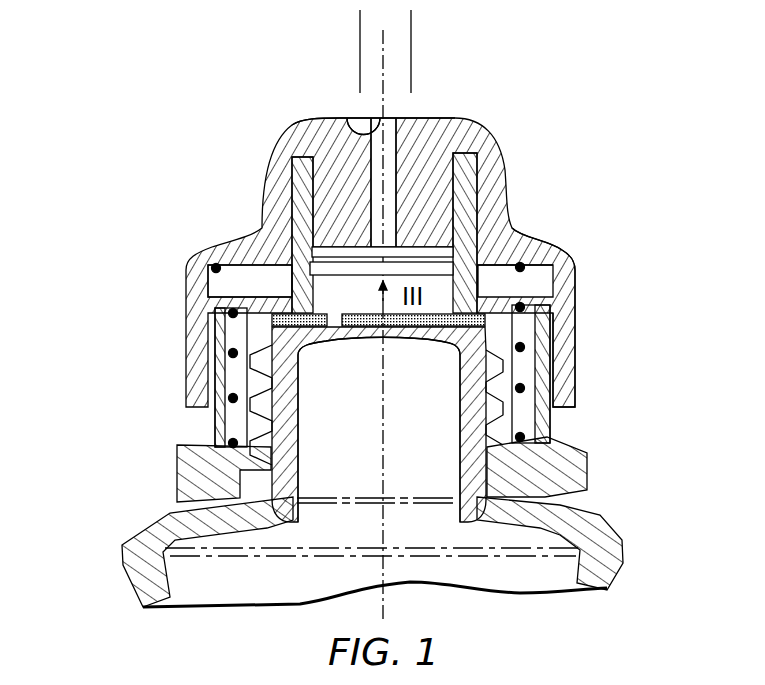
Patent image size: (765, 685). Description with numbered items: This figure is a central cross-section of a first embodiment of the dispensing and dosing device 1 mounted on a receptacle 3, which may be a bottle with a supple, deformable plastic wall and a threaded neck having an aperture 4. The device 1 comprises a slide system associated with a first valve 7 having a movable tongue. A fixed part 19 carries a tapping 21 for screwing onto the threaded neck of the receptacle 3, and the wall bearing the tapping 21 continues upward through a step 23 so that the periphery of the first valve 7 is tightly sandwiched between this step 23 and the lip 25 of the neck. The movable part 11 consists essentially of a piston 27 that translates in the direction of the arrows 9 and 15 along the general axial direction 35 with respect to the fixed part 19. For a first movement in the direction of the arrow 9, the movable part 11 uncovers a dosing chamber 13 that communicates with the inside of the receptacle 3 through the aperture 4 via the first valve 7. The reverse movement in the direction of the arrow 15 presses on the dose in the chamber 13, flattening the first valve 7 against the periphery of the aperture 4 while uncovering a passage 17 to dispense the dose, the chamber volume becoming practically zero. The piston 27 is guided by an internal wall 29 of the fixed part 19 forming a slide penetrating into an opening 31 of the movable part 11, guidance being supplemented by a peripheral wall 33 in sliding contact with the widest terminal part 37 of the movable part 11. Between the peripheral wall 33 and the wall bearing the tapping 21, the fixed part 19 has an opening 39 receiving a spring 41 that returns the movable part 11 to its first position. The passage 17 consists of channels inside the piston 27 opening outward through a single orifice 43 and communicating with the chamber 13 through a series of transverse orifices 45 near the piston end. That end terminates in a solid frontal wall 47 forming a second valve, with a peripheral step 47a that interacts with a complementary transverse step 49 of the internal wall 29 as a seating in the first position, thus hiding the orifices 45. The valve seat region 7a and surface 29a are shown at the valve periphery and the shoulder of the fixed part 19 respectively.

The device 1 is at (484, 128).
The receptacle 3 is at (132, 577).
The aperture 4 is at (398, 328).
The first valve 7 is at (426, 328).
The valve seat 7a is at (370, 328).
The arrow 9 is at (413, 56).
The movable part 11 is at (270, 155).
The dosing chamber 13 is at (218, 313).
The arrow 15 is at (358, 60).
The passage 17 is at (346, 118).
The fixed part 19 is at (592, 459).
The tapping 21 is at (478, 448).
The step 23 is at (290, 283).
The lip 25 is at (325, 340).
The piston 27 is at (300, 124).
The internal wall 29 is at (535, 246).
The shoulder inner surface 29a is at (470, 195).
The opening 31 is at (473, 173).
The peripheral wall 33 is at (540, 345).
The axial direction 35 is at (370, 606).
The widest terminal part 37 is at (565, 292).
The opening 39 is at (522, 421).
The spring 41 is at (526, 438).
The orifice 43 is at (397, 117).
The orifices 45 is at (292, 225).
The solid frontal wall 47 is at (368, 278).
The peripheral step 47a is at (214, 262).
The transverse step 49 is at (518, 262).